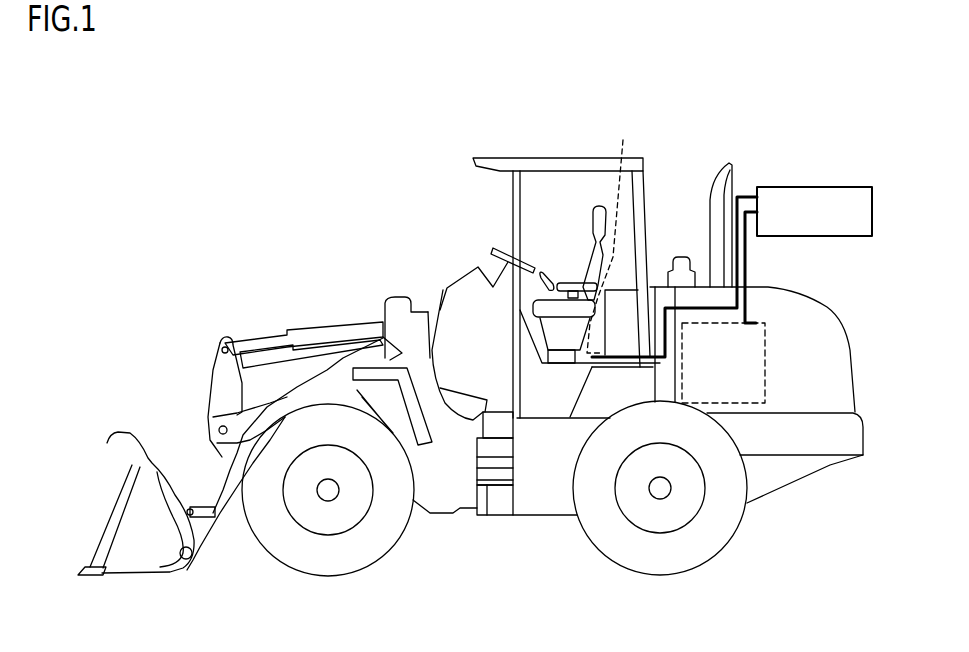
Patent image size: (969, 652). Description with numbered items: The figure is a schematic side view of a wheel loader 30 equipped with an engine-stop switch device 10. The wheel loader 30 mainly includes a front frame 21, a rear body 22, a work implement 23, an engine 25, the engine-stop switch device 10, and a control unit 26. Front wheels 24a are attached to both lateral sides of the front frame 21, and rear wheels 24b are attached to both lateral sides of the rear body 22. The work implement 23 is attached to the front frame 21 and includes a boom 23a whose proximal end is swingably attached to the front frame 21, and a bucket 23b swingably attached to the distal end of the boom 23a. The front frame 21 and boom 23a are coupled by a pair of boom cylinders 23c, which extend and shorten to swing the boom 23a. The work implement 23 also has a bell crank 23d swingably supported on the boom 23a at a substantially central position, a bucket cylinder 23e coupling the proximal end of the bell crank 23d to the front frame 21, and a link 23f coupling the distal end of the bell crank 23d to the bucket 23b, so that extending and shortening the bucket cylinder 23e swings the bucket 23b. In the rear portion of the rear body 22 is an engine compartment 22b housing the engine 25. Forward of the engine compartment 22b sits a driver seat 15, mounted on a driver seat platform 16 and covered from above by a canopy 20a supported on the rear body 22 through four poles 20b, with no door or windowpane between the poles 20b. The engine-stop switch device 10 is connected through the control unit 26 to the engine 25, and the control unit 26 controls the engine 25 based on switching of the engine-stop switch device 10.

The wheel loader 30 is at (778, 106).
The engine-stop switch device 10 is at (575, 240).
The driver seat 15 is at (597, 260).
The driver seat platform 16 is at (563, 357).
The canopy 20a is at (547, 163).
The poles 20b is at (513, 212).
The front frame 21 is at (448, 503).
The rear body 22 is at (790, 477).
The engine compartment 22b is at (793, 310).
The work implement 23 is at (158, 368).
The boom 23a is at (333, 380).
The bucket 23b is at (127, 513).
The boom cylinders 23c is at (388, 410).
The bell crank 23d is at (222, 380).
The bucket cylinder 23e is at (307, 333).
The link 23f is at (207, 507).
The front wheels 24a is at (328, 565).
The rear wheels 24b is at (660, 565).
The engine 25 is at (755, 323).
The control unit 26 is at (817, 186).